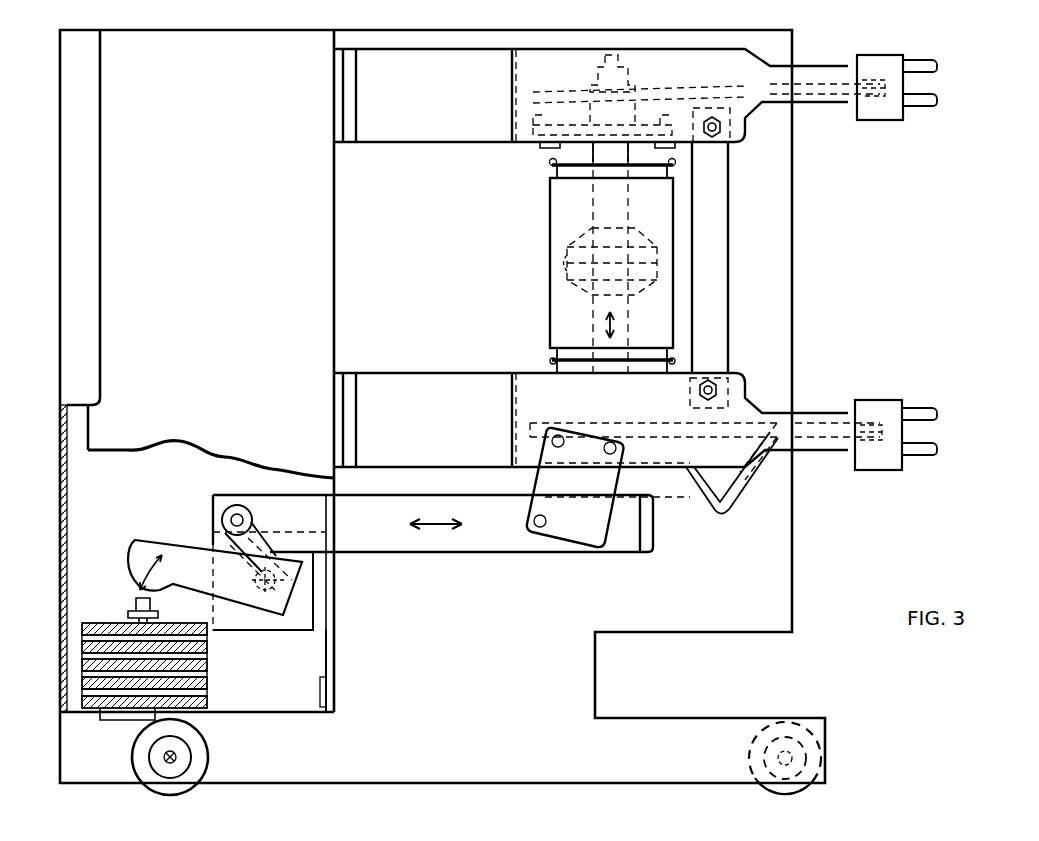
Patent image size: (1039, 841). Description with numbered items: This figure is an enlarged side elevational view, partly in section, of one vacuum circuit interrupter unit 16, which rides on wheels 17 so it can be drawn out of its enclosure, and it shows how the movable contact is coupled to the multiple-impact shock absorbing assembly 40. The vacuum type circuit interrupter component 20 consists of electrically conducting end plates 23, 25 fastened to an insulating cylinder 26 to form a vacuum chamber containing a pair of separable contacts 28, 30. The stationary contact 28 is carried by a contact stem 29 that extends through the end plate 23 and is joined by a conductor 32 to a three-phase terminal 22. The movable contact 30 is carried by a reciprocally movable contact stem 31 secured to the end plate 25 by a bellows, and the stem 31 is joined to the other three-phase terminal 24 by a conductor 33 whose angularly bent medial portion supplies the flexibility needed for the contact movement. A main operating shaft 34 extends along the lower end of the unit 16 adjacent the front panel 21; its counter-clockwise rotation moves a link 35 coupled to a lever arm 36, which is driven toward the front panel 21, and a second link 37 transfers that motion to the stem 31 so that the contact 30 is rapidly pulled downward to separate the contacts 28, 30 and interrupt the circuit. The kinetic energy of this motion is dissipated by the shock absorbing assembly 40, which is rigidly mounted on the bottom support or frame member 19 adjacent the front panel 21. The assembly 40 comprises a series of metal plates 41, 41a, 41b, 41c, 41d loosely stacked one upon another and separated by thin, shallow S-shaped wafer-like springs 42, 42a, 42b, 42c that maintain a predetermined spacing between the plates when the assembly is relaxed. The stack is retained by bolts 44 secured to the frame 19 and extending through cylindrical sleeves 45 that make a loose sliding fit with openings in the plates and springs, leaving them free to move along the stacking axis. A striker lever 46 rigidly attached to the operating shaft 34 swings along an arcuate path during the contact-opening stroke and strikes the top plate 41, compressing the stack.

The circuit interrupter unit 16 is at (245, 226).
The wheels 17 is at (200, 752).
The bottom support or frame member 19 is at (300, 715).
The vacuum type circuit interrupter component 20 is at (621, 257).
The front panel 21 is at (60, 470).
The three-phase terminal 22 is at (888, 118).
The end plate 23 is at (552, 158).
The three-phase terminal 24 is at (888, 455).
The end plate 25 is at (552, 362).
The insulating cylinder 26 is at (549, 306).
The stationary contact 28 is at (575, 258).
The contact stem 29 is at (620, 205).
The movable contact 30 is at (582, 272).
The contact stem 31 is at (620, 332).
The conductor 32 is at (750, 85).
The conductor 33 is at (725, 509).
The main operating shaft 34 is at (315, 578).
The link 35 is at (250, 520).
The lever arm 36 is at (462, 547).
The second link 37 is at (548, 478).
The multiple-impact shock absorbing assembly 40 is at (146, 660).
The metal plate 41 is at (82, 626).
The metal plate 41a is at (82, 650).
The metal plate 41b is at (82, 672).
The metal plate 41c is at (82, 696).
The metal plate 41d is at (112, 708).
The wafer-like spring 42 is at (207, 636).
The wafer-like spring 42a is at (207, 640).
The wafer-like spring 42b is at (207, 660).
The wafer-like spring 42c is at (207, 690).
The bolt 44 is at (135, 605).
The cylindrical sleeve 45 is at (152, 622).
The lever 46 is at (155, 545).